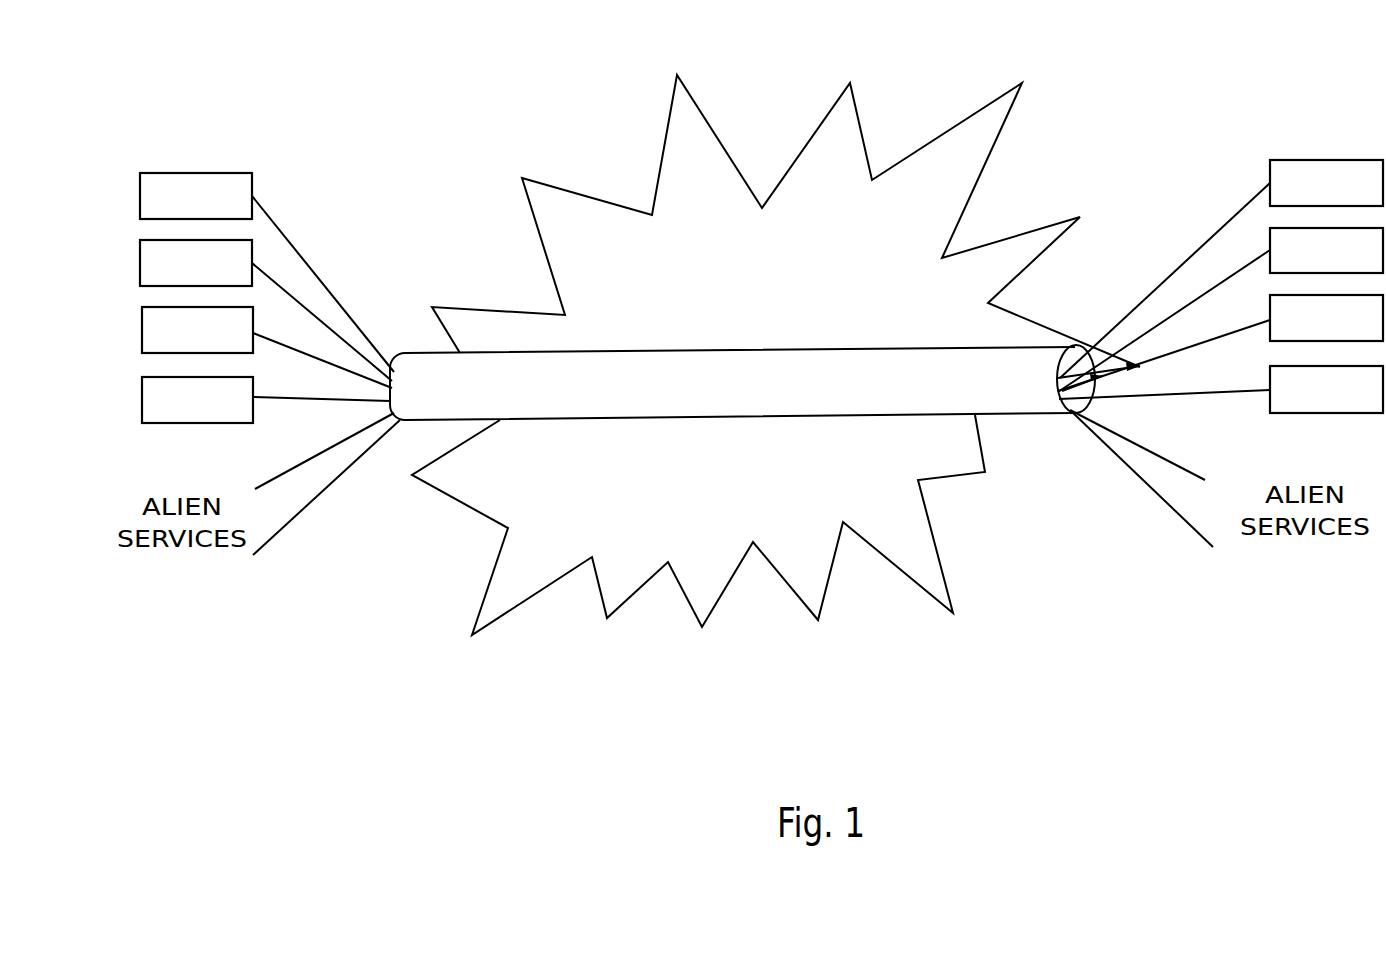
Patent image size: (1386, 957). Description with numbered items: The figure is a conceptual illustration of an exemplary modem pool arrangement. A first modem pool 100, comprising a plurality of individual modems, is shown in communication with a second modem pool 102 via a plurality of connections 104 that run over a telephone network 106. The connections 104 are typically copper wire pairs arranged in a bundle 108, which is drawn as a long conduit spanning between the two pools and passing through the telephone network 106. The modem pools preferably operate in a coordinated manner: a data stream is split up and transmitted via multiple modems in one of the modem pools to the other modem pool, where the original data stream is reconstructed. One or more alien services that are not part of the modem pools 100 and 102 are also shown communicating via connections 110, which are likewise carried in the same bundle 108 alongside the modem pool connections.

The first modem pool 100 is at (130, 116).
The second modem pool 102 is at (1285, 104).
The connections 104 is at (287, 227).
The telephone network 106 is at (677, 193).
The bundle 108 is at (440, 353).
The connections 110 is at (303, 508).